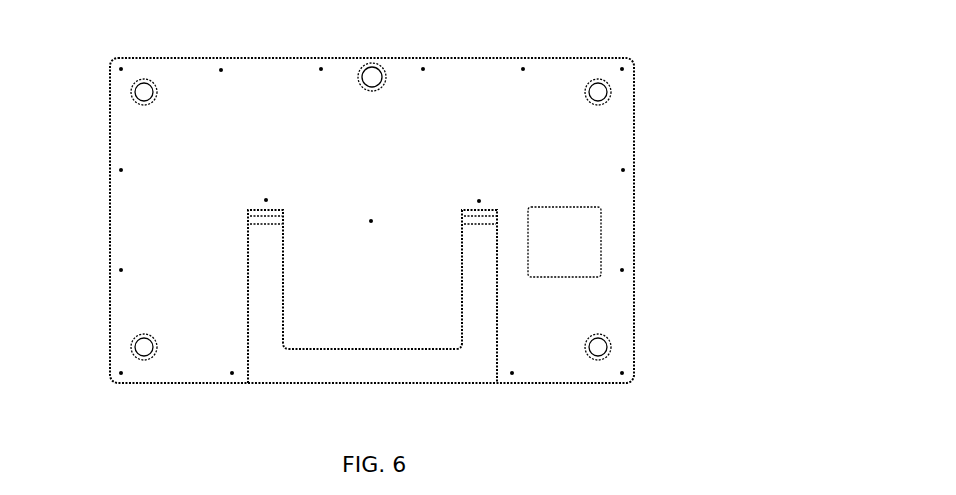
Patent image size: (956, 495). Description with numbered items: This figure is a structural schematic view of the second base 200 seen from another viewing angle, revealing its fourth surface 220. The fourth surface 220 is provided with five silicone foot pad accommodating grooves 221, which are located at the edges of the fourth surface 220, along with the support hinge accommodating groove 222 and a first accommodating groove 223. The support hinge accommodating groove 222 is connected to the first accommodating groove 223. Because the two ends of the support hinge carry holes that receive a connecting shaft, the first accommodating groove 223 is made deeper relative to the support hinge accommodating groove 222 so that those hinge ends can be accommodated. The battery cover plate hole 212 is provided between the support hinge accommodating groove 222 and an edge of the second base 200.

The second base 200 is at (678, 37).
The fourth surface 220 is at (215, 175).
The silicone foot pad accommodating groove 221 is at (145, 105).
The support hinge accommodating groove 222 is at (262, 300).
The first accommodating groove 223 is at (262, 215).
The battery cover plate hole 212 is at (568, 232).